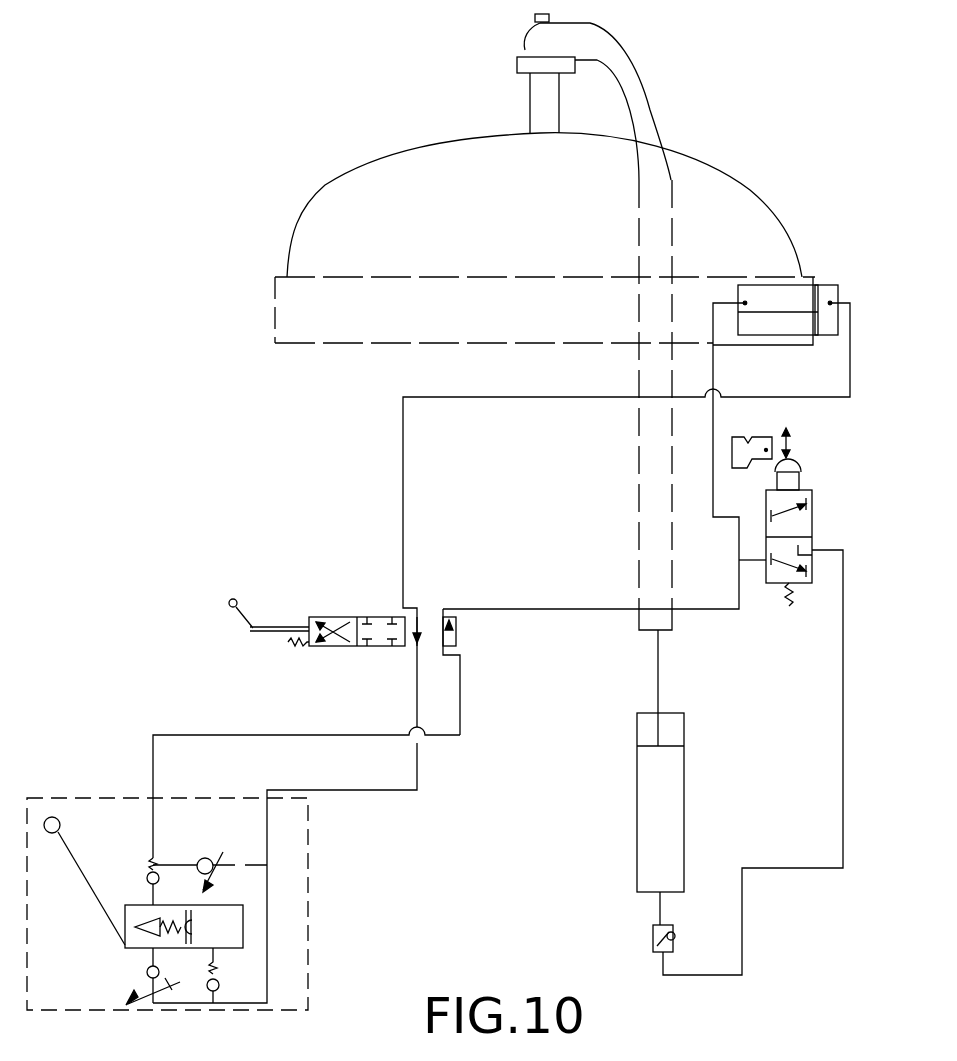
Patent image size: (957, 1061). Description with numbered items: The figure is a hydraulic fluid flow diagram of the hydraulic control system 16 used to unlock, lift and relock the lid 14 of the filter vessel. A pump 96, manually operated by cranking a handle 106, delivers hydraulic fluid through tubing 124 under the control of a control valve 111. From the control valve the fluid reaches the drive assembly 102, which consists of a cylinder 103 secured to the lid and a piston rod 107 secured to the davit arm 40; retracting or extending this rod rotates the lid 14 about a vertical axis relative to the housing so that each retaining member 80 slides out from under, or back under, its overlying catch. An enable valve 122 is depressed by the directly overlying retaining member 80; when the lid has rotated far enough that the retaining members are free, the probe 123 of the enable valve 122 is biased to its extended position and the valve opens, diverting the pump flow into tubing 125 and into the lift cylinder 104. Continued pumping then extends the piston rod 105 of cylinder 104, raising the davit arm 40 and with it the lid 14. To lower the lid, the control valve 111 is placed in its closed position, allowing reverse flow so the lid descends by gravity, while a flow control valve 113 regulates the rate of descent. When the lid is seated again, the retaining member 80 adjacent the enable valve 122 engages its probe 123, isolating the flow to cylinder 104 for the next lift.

The lid 14 is at (696, 166).
The davit arm 40 is at (645, 238).
The retaining member 80 is at (742, 440).
The pump 96 is at (133, 950).
The drive assembly 102 is at (823, 284).
The cylinder 103 is at (760, 285).
The cylinder 104 is at (636, 795).
The piston rod 105 is at (660, 660).
The handle 106 is at (74, 868).
The piston rod 107 is at (790, 313).
The control valve 111 is at (359, 615).
The flow control valve 113 is at (652, 940).
The enable valve 122 is at (812, 498).
The probe 123 is at (802, 466).
The tubing 124 is at (233, 735).
The tubing 125 is at (845, 722).
The hydraulic control system 16 is at (90, 812).